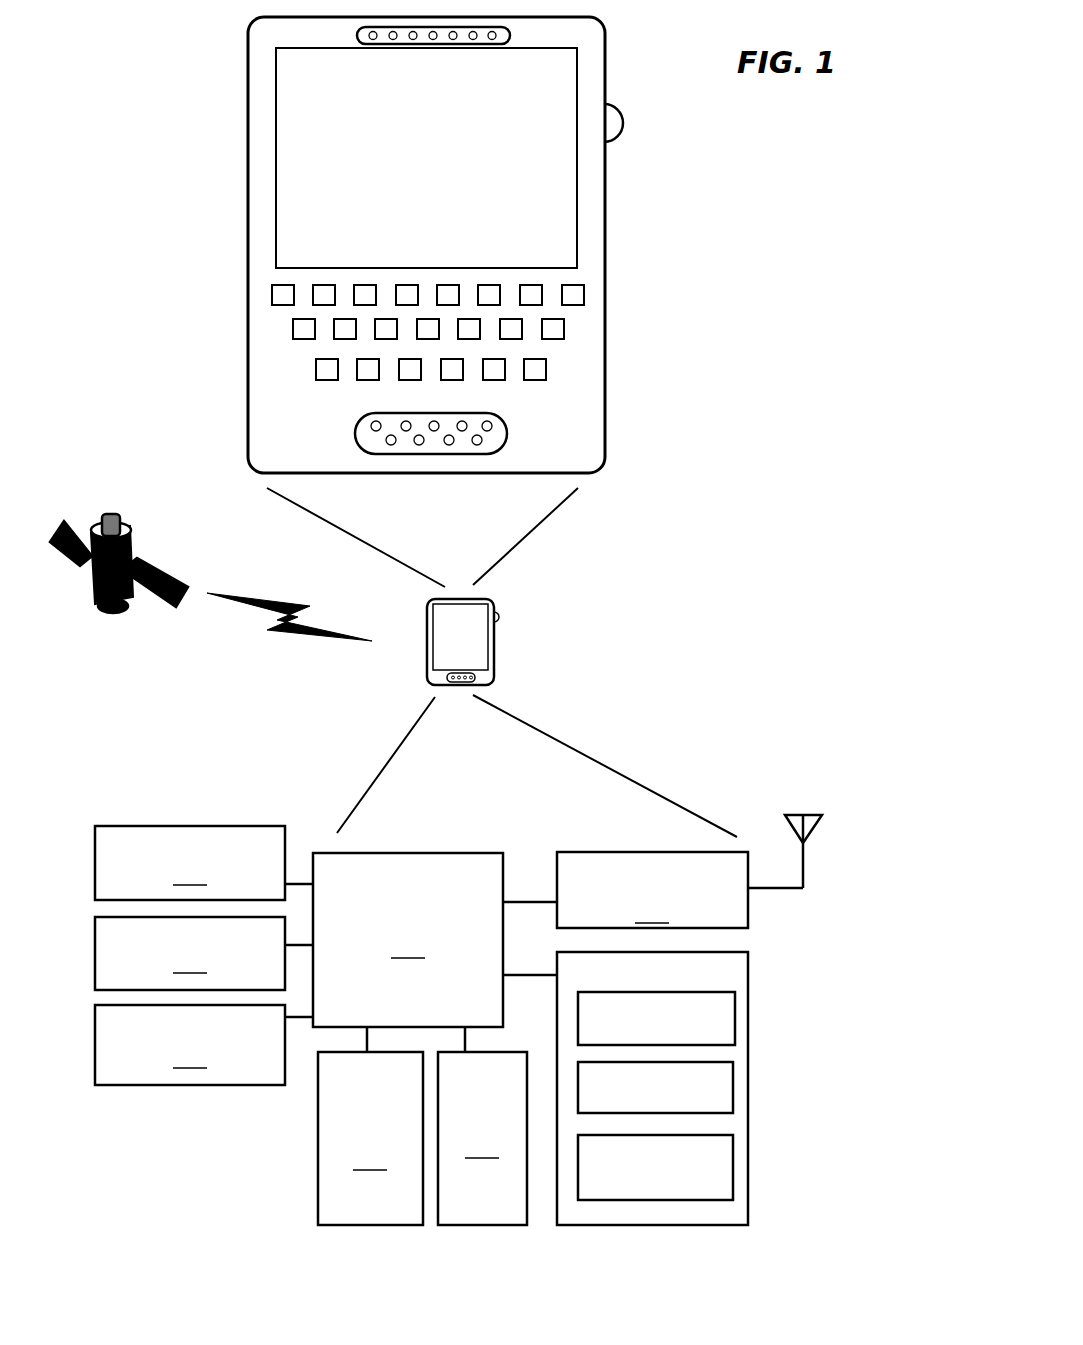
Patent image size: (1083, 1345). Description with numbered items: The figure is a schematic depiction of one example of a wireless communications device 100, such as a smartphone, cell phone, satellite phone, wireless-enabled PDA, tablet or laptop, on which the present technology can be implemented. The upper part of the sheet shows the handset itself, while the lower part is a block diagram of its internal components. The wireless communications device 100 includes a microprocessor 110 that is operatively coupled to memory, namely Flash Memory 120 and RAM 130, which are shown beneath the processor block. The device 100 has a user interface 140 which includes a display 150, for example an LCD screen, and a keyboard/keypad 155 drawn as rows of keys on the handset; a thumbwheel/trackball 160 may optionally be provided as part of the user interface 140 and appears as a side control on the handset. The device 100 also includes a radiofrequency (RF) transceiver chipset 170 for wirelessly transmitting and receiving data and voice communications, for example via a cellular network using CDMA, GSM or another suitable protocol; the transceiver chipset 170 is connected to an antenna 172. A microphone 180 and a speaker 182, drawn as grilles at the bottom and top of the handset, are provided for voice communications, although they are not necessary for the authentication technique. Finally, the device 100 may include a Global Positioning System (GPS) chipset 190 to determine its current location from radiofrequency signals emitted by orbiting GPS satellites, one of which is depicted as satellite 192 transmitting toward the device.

The wireless communications device 100 is at (605, 250).
The microprocessor 110 is at (408, 940).
The Flash Memory 120 is at (370, 1138).
The RAM 130 is at (482, 1138).
The user interface 140 is at (748, 975).
The display 150 is at (543, 185).
The keyboard/keypad 155 is at (580, 330).
The thumbwheel/trackball 160 is at (623, 125).
The radiofrequency (RF) transceiver chipset 170 is at (652, 890).
The antenna 172 is at (803, 865).
The microphone 180 is at (508, 433).
The speaker 182 is at (352, 33).
The Global Positioning System (GPS) chipset 190 is at (190, 1045).
The GPS satellite 192 is at (112, 612).